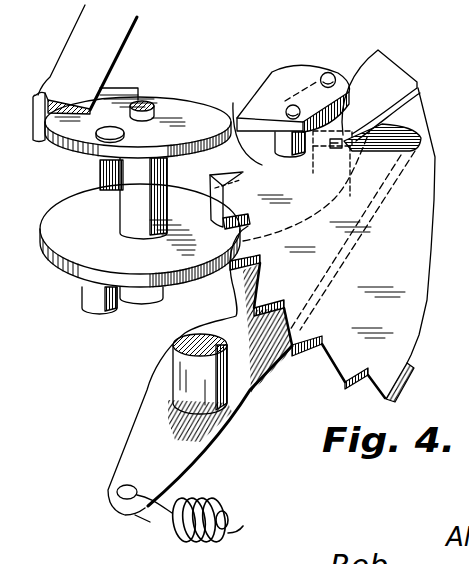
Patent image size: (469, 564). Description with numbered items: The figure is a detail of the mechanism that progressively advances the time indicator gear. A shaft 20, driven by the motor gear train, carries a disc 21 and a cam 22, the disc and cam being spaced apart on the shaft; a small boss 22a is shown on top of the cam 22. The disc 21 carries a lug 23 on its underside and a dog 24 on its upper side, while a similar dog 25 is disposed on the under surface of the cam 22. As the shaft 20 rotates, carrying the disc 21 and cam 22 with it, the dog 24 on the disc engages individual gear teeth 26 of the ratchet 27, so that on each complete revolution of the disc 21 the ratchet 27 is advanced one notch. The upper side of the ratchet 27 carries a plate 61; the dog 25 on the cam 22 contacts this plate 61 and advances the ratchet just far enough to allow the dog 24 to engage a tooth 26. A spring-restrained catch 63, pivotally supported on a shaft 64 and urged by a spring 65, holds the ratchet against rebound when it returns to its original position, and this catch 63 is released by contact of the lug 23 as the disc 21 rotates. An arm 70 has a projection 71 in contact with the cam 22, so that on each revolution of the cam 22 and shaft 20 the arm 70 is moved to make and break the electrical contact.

The shaft 20 is at (125, 210).
The disc 21 is at (75, 247).
The cam 22 is at (206, 108).
The hub pin 22a is at (142, 100).
The lug 23 is at (97, 305).
The dog 24 is at (223, 178).
The dog 25 is at (100, 170).
The gear teeth 26 is at (337, 368).
The ratchet 27 is at (407, 343).
The plate 61 is at (307, 67).
The spring-restrained catch 63 is at (405, 132).
The shaft 64 is at (188, 358).
The spring 65 is at (223, 508).
The arm 70 is at (83, 45).
The projection 71 is at (42, 115).